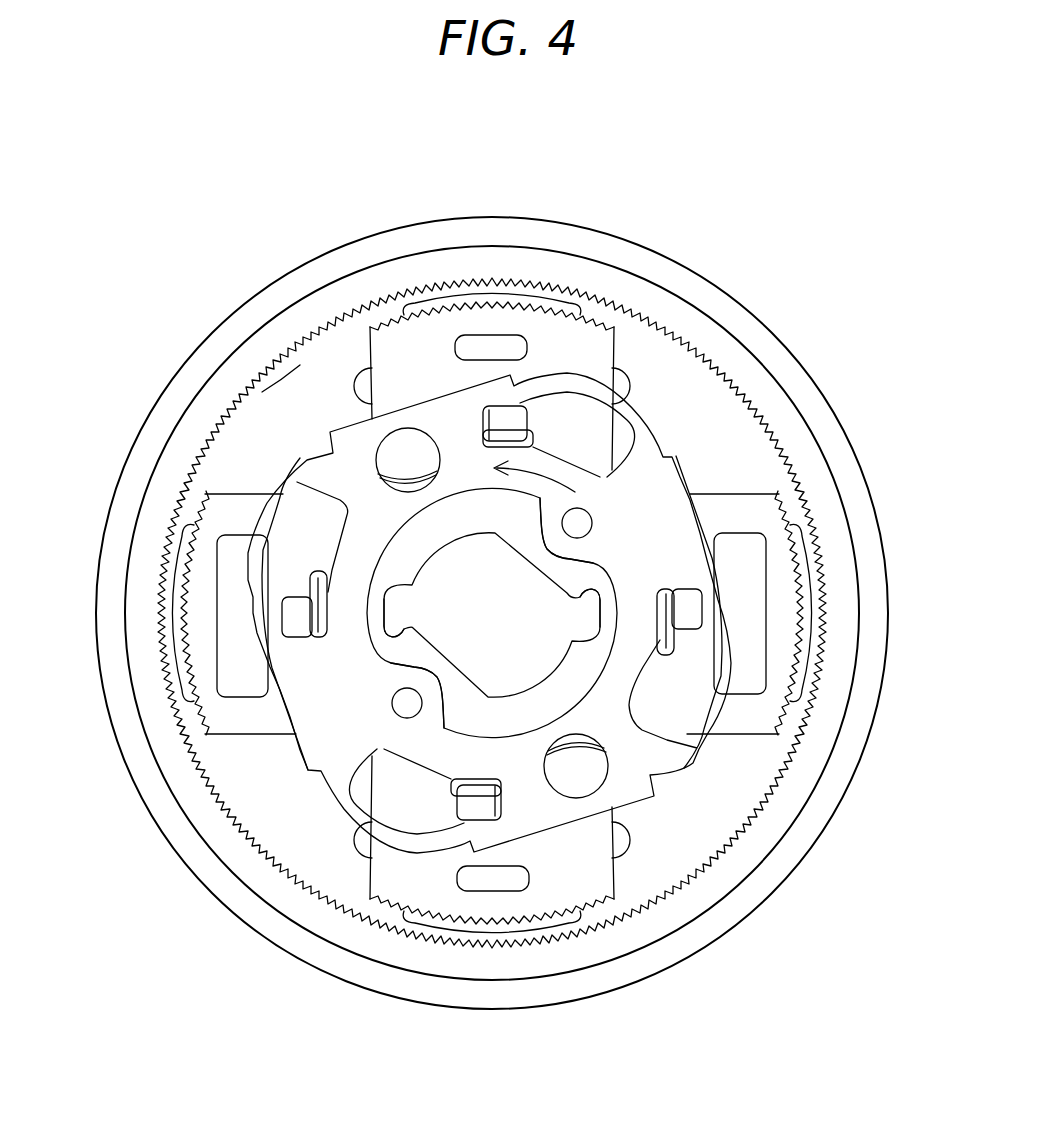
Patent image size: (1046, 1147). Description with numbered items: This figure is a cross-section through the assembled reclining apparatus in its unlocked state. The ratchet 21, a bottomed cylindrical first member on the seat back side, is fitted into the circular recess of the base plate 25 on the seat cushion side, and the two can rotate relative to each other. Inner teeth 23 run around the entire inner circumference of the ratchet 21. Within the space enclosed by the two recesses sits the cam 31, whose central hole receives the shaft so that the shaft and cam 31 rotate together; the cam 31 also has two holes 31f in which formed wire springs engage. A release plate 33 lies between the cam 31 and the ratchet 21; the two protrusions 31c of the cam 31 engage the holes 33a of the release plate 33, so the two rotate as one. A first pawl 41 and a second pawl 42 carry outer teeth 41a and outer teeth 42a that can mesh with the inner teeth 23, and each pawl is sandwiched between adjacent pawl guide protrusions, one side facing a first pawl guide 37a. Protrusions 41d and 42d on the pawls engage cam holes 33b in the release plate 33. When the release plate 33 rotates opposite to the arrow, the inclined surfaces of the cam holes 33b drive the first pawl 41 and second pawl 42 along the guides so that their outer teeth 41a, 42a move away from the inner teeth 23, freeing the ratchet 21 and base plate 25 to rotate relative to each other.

The ratchet 21 is at (195, 400).
The base plate 25 is at (223, 332).
The inner teeth 23 is at (350, 300).
The first pawl guide 37a is at (337, 337).
The second pawl 42 is at (420, 340).
The outer teeth 42a is at (500, 297).
The protrusion 42d is at (512, 407).
The first pawl 41 is at (787, 573).
The outer teeth 41a is at (197, 703).
The protrusion 41d is at (300, 620).
The release plate 33 is at (643, 473).
The cam holes 33b is at (597, 403).
The holes 33a is at (580, 523).
The protrusions 31c is at (492, 613).
The cam 31 is at (582, 568).
The holes 31f is at (613, 588).